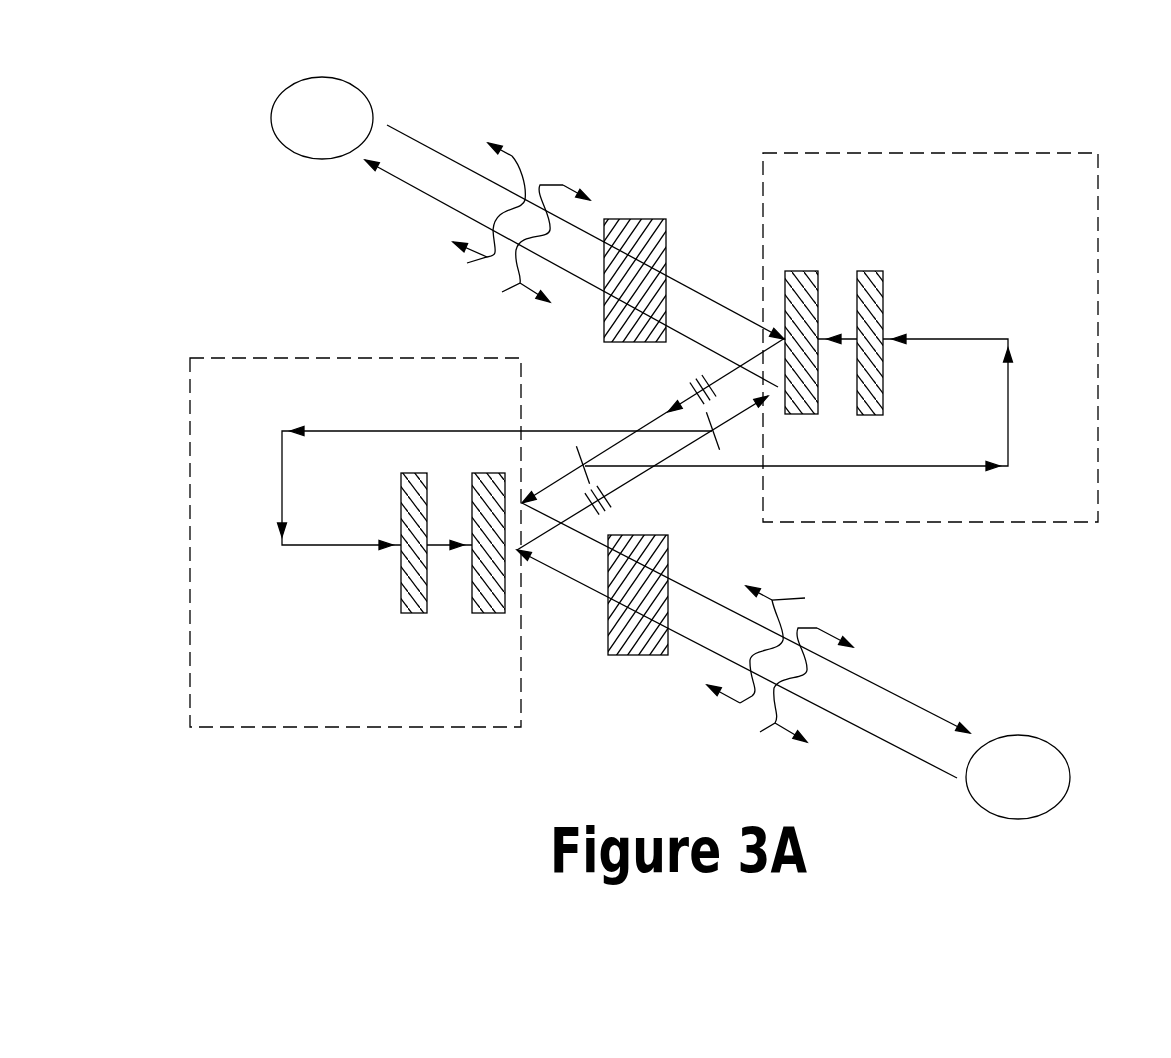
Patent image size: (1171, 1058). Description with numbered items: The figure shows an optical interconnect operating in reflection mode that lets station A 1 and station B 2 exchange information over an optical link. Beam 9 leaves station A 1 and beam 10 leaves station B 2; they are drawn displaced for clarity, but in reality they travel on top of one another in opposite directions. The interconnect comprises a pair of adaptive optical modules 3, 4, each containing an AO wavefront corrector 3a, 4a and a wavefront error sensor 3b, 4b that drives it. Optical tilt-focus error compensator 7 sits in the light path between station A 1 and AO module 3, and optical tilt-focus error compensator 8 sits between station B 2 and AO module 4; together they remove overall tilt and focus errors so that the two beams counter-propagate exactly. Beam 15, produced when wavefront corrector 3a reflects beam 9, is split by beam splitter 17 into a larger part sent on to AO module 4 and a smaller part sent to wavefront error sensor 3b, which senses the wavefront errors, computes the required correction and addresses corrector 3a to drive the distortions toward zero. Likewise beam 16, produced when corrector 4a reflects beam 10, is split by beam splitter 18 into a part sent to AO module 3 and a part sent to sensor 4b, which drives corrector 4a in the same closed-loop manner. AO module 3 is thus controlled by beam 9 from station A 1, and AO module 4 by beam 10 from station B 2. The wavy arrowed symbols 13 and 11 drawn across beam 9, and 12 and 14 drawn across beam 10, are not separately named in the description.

The first terminal A 1 is at (271, 108).
The second terminal B 2 is at (1071, 767).
The adaptive optical module 3 is at (910, 153).
The AO wavefront corrector 3a is at (812, 271).
The wavefront error sensor 3b is at (877, 271).
The adaptive optical module 4 is at (260, 727).
The AO wavefront corrector 4a is at (485, 613).
The wavefront error sensor 4b is at (416, 613).
The optical tilt-focus error compensator 7 is at (635, 219).
The optical tilt-focus error compensator 8 is at (643, 655).
The optical beam 9 is at (403, 133).
The optical beam 10 is at (575, 582).
The first wave signal 11 is at (502, 292).
The second wave signal 12 is at (805, 598).
The third wave signal 13 is at (512, 156).
The fourth wave signal 14 is at (760, 732).
The beam 15 is at (690, 386).
The beam 16 is at (605, 512).
The beam splitter 17 is at (580, 462).
The beam splitter 18 is at (715, 432).